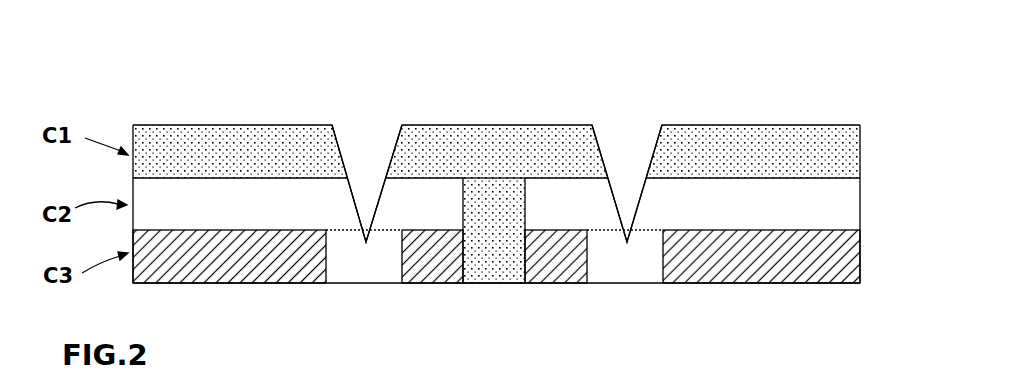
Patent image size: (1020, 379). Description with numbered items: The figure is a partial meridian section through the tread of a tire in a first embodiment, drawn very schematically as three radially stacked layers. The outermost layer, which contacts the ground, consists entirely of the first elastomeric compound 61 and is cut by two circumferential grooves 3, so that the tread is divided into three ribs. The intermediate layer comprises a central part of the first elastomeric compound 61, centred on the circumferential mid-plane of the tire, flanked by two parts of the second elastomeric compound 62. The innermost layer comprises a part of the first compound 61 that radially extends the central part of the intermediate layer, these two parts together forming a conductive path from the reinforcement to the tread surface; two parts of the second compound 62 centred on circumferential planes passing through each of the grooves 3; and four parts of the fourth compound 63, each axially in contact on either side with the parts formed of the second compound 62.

The circumferential groove 3 is at (356, 125).
The first elastomeric compound 61 is at (760, 143).
The second elastomeric compound 62 is at (258, 193).
The fourth compound 63 is at (250, 262).